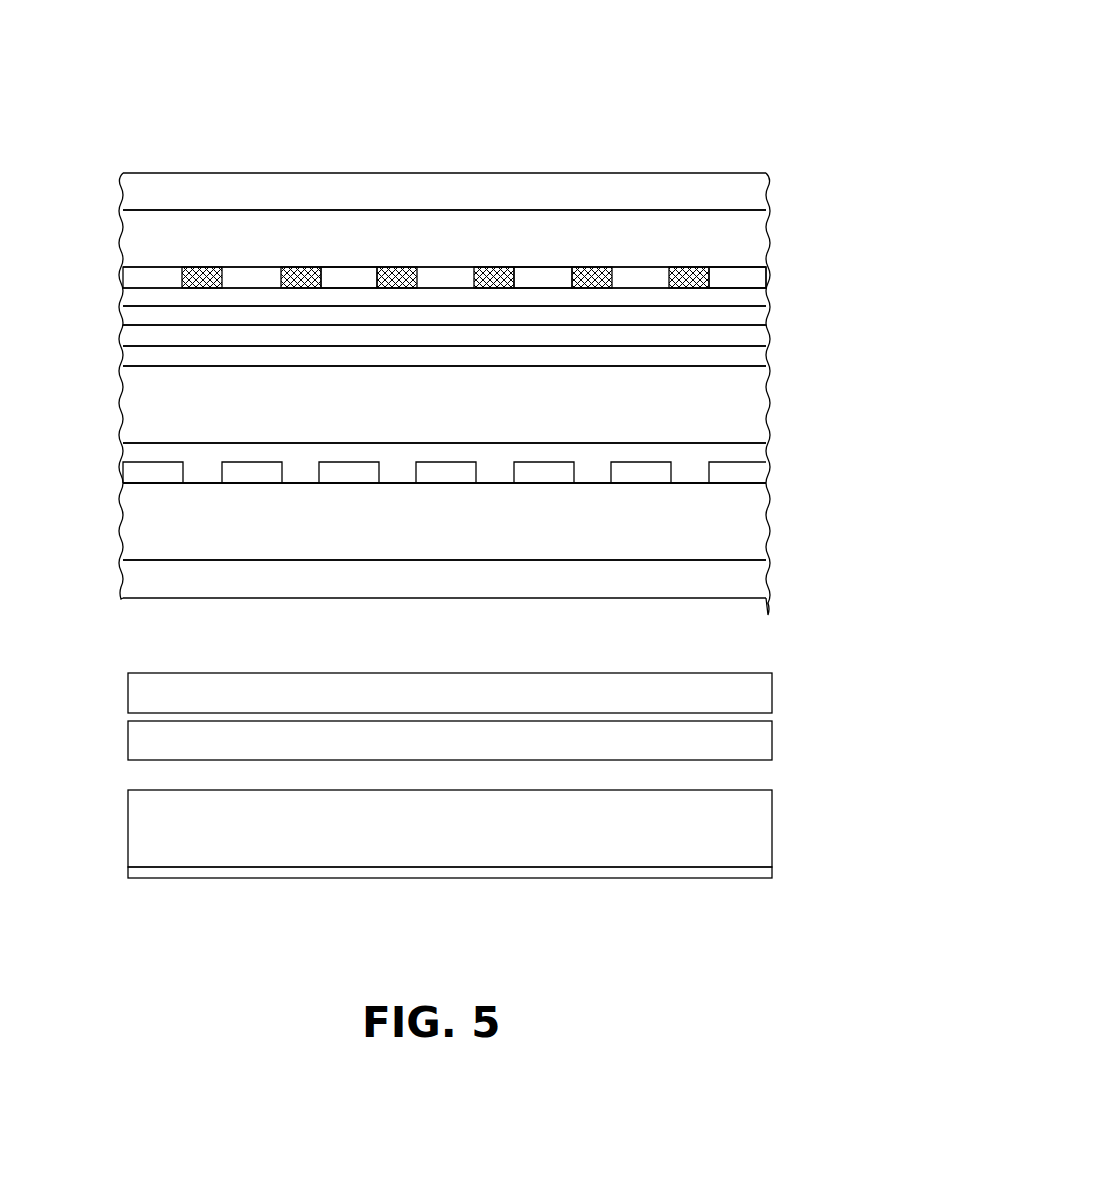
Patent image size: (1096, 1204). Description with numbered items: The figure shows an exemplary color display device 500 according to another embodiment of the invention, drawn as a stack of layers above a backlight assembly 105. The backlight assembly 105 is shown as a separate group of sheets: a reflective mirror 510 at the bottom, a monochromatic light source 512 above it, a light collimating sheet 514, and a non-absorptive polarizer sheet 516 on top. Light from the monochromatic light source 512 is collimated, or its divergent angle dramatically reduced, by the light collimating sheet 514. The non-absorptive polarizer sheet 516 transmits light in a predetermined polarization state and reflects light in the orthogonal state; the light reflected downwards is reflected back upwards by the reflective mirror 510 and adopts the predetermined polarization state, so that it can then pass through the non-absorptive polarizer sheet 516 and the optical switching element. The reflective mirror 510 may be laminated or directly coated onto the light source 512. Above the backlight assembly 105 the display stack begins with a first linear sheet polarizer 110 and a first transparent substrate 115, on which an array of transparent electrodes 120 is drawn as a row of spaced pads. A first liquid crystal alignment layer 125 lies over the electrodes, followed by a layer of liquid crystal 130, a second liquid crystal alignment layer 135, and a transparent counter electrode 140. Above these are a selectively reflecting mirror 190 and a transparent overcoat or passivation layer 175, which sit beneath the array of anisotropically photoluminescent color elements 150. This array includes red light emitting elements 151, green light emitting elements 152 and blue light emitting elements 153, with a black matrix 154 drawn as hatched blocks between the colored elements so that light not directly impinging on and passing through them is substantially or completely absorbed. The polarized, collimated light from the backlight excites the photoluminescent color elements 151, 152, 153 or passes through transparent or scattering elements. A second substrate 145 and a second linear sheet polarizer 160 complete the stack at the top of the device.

The color display device 500 is at (807, 43).
The second linear sheet polarizer 160 is at (758, 193).
The second substrate 145 is at (762, 243).
The array of anisotropically photoluminescent color elements 150 is at (481, 212).
The red light emitting elements 151 is at (363, 278).
The green light emitting elements 152 is at (557, 278).
The blue light emitting elements 153 is at (720, 278).
The black matrix 154 is at (201, 276).
The transparent overcoat or passivation layer 175 is at (143, 297).
The selectively reflecting mirror 190 is at (757, 320).
The transparent counter electrode 140 is at (760, 339).
The second liquid crystal alignment layer 135 is at (762, 358).
The layer of liquid crystal 130 is at (757, 406).
The first liquid crystal alignment layer 125 is at (143, 452).
The array of transparent electrodes 120 is at (143, 470).
The first transparent substrate 115 is at (758, 503).
The first linear sheet polarizer 110 is at (708, 588).
The backlight assembly 105 is at (108, 673).
The non-absorptive polarizer sheet 516 is at (762, 693).
The light collimating sheet 514 is at (763, 744).
The monochromatic light source 512 is at (763, 822).
The reflective mirror 510 is at (757, 875).